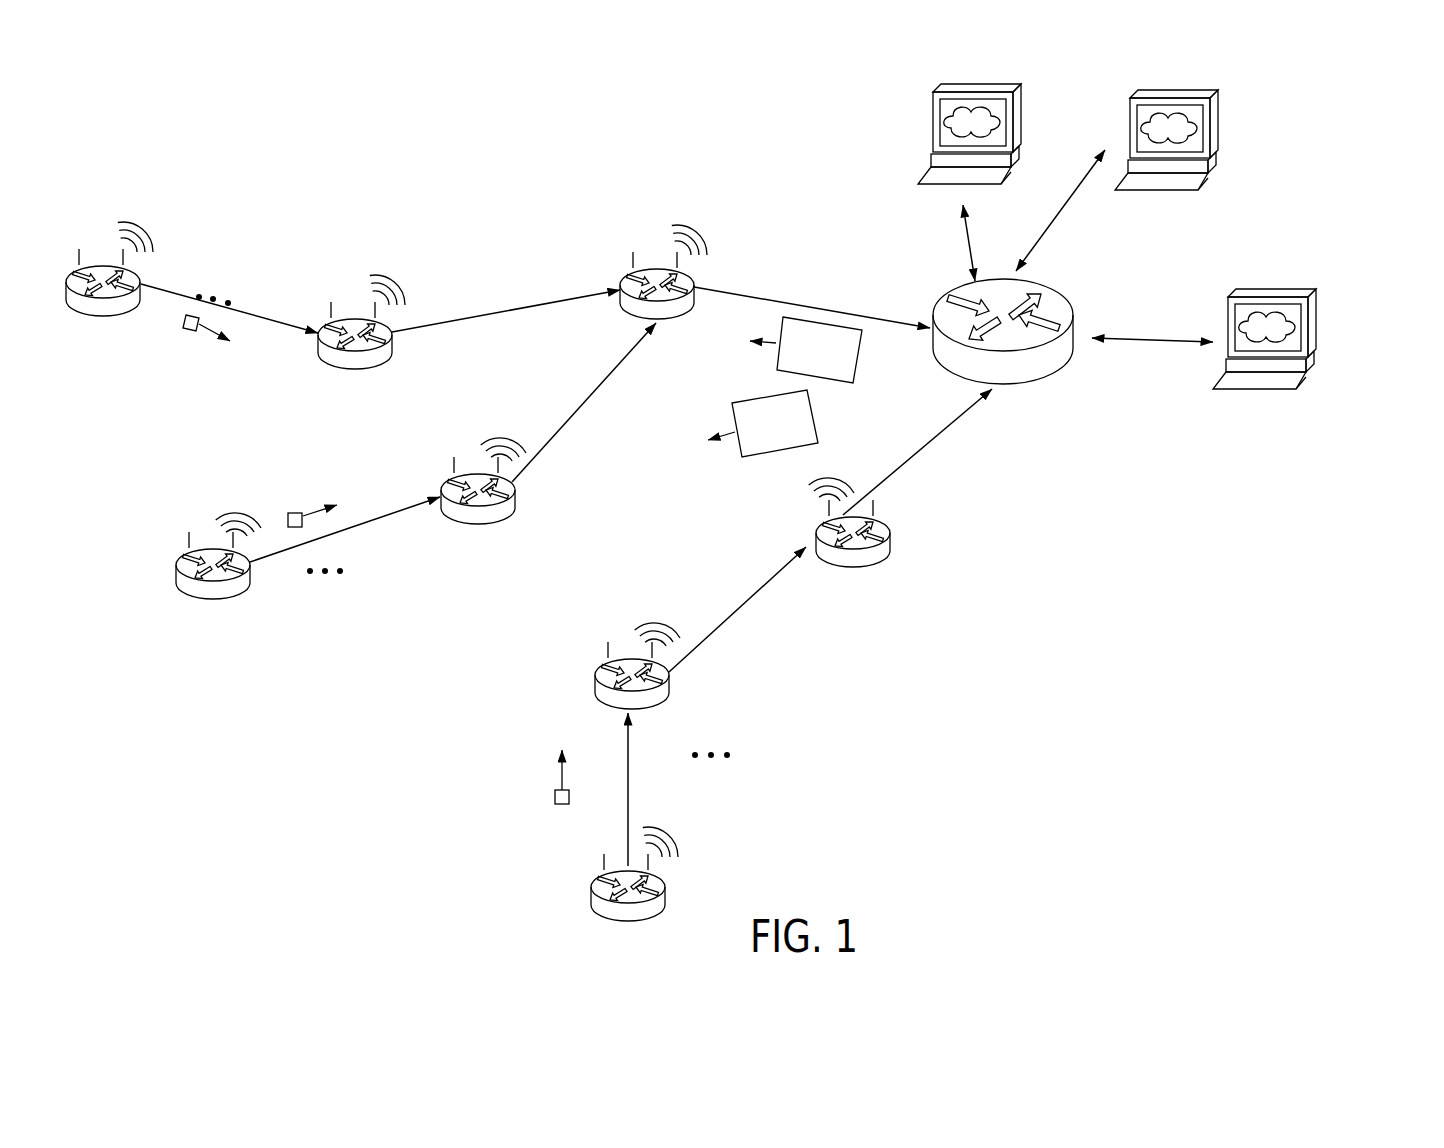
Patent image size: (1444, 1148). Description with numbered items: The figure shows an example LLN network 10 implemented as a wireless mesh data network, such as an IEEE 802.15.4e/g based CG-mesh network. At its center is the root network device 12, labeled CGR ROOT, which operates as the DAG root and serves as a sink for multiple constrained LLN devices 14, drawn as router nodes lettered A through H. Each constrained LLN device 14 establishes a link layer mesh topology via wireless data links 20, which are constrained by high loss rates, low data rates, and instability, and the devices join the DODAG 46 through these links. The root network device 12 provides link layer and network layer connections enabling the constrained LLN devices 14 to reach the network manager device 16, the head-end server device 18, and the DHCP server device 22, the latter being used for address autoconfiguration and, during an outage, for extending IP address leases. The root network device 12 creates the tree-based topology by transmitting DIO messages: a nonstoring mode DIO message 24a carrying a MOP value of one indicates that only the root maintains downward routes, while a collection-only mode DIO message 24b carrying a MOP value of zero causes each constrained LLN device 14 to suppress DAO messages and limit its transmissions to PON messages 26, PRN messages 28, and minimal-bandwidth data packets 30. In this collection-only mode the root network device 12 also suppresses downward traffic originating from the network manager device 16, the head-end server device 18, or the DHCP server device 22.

The LLN network 10 is at (636, 128).
The root network device 12 is at (1047, 372).
The constrained LLN device 14 is at (108, 318).
The network manager device 16 is at (1232, 158).
The head-end server device 18 is at (1320, 385).
The wireless data link 20 is at (150, 233).
The DHCP server device 22 is at (912, 118).
The nonstoring mode DIO message 24a is at (858, 355).
The collection-only mode DIO message 24b is at (752, 458).
The PON message 26 is at (555, 797).
The PRN message 28 is at (290, 512).
The minimal-bandwidth data packet 30 is at (190, 331).
The DODAG 46 is at (971, 533).